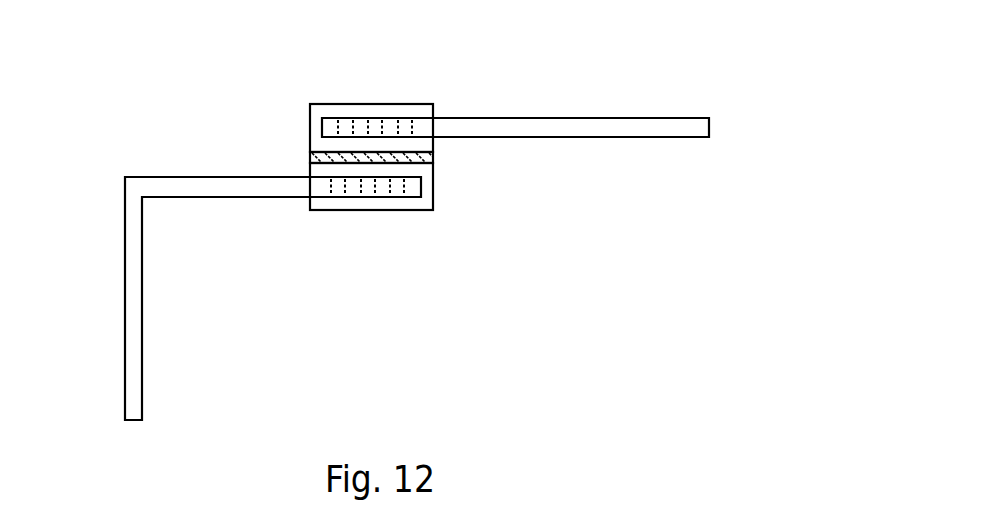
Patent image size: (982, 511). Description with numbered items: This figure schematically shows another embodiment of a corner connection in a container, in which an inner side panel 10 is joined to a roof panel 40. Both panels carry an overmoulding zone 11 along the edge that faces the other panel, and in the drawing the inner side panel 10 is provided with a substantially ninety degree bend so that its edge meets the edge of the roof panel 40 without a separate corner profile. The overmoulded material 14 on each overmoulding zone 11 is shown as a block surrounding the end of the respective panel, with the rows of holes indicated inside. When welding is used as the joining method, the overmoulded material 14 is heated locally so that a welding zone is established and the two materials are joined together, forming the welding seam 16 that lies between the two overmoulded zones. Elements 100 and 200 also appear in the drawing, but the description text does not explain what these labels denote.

The inner side panel 10 is at (384, 232).
The overmoulding zone 11 is at (368, 156).
The overmoulded material 14 is at (411, 107).
The welding seam 16 is at (433, 156).
The roof panel 40 is at (553, 130).
The conductor strip 100 is at (689, 117).
The electrical component / arm 200 is at (384, 232).